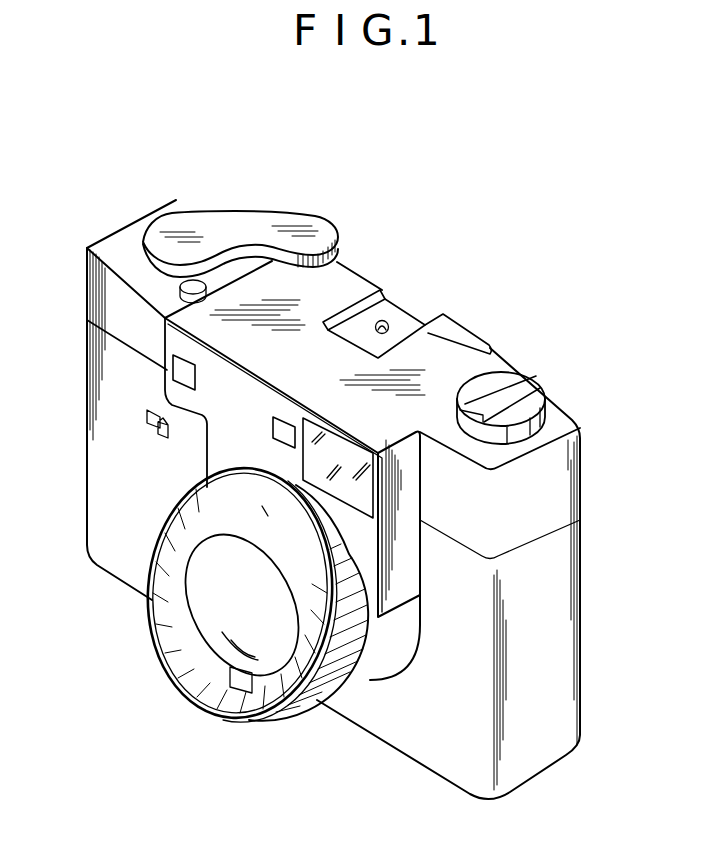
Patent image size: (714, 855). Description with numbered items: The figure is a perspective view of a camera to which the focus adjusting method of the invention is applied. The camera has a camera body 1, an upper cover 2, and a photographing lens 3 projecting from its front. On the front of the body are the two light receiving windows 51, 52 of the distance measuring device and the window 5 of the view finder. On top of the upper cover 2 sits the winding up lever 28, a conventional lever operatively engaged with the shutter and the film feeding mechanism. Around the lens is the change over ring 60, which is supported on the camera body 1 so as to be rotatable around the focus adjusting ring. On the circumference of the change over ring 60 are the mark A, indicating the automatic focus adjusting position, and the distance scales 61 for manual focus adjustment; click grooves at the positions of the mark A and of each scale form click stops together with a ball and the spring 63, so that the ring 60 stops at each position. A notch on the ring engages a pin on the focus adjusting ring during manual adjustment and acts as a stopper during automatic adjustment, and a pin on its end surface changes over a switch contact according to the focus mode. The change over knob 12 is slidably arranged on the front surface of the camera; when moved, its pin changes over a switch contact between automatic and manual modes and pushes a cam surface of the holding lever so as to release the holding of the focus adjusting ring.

The camera body 1 is at (437, 713).
The upper cover 2 is at (122, 249).
The photographing lens 3 is at (215, 606).
The window of the view finder 5 is at (350, 472).
The change over knob 12 is at (159, 433).
The winding up lever 28 is at (255, 226).
The light receiving window of the distance measuring device 51 is at (283, 431).
The light receiving window of the distance measuring device 52 is at (183, 372).
The change over ring 60 is at (344, 668).
The distance scales 61 is at (222, 488).
The spring 63 is at (266, 516).